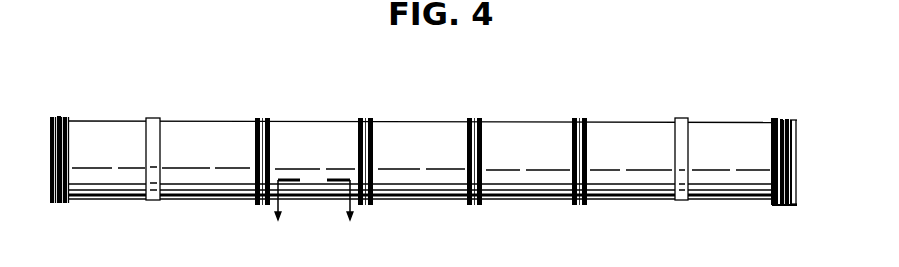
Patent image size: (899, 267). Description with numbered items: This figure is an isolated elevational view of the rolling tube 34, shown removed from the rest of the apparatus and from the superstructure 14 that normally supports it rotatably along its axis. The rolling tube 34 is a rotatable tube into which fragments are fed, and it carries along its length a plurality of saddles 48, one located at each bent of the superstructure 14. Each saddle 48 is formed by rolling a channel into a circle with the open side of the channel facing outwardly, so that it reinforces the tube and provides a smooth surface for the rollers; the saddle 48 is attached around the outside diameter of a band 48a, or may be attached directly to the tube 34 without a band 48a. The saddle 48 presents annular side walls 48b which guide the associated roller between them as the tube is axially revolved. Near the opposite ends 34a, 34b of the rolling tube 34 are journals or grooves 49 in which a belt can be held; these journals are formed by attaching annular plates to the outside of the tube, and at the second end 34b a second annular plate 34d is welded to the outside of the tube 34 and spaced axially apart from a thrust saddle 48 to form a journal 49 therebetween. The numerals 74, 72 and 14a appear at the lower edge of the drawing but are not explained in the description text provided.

The rolling tube 34 is at (433, 121).
The first end of the tube 34a is at (51, 110).
The second end of the tube 34b is at (787, 207).
The second annular plate 34d is at (792, 204).
The saddle 48 is at (68, 114).
The band 48a is at (272, 121).
The annular side walls 48b is at (776, 119).
The journal 49 is at (57, 114).
The component 74 is at (247, 266).
The component 72 is at (265, 260).
The superstructure 14 is at (298, 266).
The component 14a is at (348, 266).